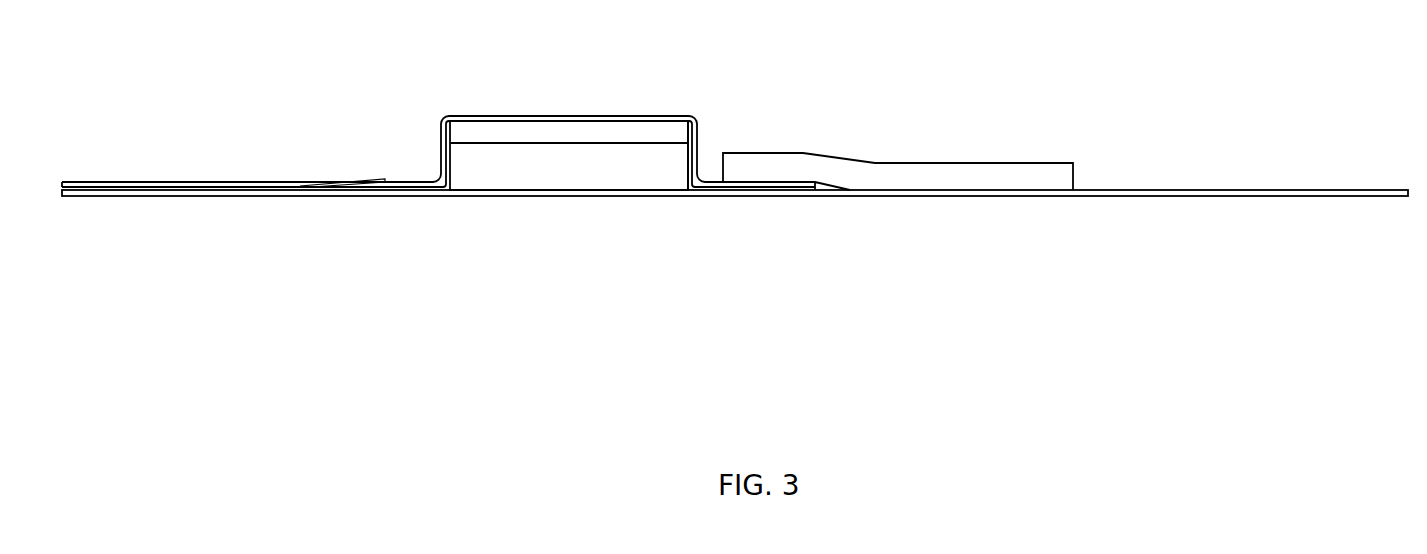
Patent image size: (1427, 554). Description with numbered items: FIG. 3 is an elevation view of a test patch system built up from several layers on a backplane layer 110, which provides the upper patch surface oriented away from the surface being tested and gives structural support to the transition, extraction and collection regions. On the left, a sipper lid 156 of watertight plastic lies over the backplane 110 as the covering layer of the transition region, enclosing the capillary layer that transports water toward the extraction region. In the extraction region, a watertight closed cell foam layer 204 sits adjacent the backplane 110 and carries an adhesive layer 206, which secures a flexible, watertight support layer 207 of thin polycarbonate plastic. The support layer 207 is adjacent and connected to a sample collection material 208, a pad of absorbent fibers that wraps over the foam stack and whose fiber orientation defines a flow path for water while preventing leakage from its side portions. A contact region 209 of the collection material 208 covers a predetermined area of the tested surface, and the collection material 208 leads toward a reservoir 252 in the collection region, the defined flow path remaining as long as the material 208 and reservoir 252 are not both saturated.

The backplane layer 110 is at (840, 198).
The sipper lid 156 is at (135, 182).
The closed cell foam layer 204 is at (570, 178).
The adhesive layer 206 is at (642, 143).
The support layer 207 is at (512, 134).
The sample collection material 208 is at (772, 187).
The contact region 209 is at (527, 114).
The reservoir 252 is at (1023, 175).